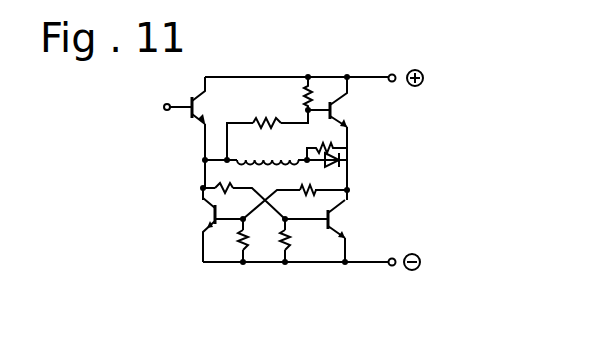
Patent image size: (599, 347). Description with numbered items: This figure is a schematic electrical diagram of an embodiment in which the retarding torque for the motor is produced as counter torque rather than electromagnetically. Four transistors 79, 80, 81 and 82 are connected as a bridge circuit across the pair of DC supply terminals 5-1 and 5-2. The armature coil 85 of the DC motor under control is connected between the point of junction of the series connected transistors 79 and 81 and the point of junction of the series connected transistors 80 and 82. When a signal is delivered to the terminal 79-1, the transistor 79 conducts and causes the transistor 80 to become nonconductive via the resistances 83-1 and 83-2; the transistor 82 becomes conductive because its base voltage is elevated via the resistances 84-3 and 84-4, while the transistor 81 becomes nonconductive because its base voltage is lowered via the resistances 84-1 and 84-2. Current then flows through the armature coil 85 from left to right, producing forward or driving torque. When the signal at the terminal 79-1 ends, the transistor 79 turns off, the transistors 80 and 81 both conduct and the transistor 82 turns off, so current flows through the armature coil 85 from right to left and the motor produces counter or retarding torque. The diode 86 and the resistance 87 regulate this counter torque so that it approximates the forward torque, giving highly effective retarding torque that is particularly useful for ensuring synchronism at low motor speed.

The transistor 79 is at (197, 102).
The terminal 79-1 is at (165, 104).
The resistance 83-1 is at (305, 97).
The DC supply terminal 5-1 is at (391, 72).
The transistor 80 is at (340, 106).
The resistance 87 is at (318, 147).
The diode 86 is at (340, 156).
The resistance 84-3 is at (190, 151).
The resistance 83-2 is at (262, 137).
The armature coil 85 is at (289, 165).
The resistance 84-1 is at (318, 188).
The transistor 81 is at (211, 213).
The transistor 82 is at (338, 221).
The resistance 84-2 is at (247, 240).
The resistance 84-4 is at (290, 240).
The DC supply terminal 5-2 is at (397, 274).